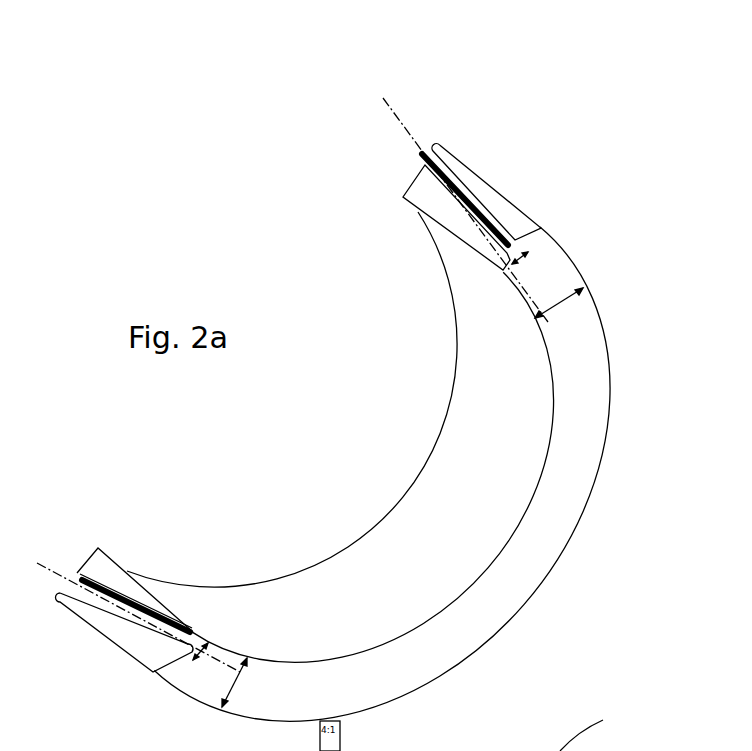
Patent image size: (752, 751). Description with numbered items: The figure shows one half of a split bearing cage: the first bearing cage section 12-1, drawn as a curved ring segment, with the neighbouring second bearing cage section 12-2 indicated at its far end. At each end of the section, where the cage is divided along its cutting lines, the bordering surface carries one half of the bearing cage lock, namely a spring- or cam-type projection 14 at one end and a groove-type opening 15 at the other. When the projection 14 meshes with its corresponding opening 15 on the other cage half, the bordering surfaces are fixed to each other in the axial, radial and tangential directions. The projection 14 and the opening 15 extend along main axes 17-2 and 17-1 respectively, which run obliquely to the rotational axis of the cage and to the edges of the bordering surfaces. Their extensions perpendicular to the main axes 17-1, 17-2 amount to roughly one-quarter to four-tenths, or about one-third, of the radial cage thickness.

The first bearing cage section 12-1 is at (517, 122).
The second bearing cage section 12-2 is at (665, 727).
The projection 14 is at (420, 213).
The opening 15 is at (127, 572).
The main axis of the projection 17-1 is at (55, 572).
The main axis of the opening 17-2 is at (412, 137).